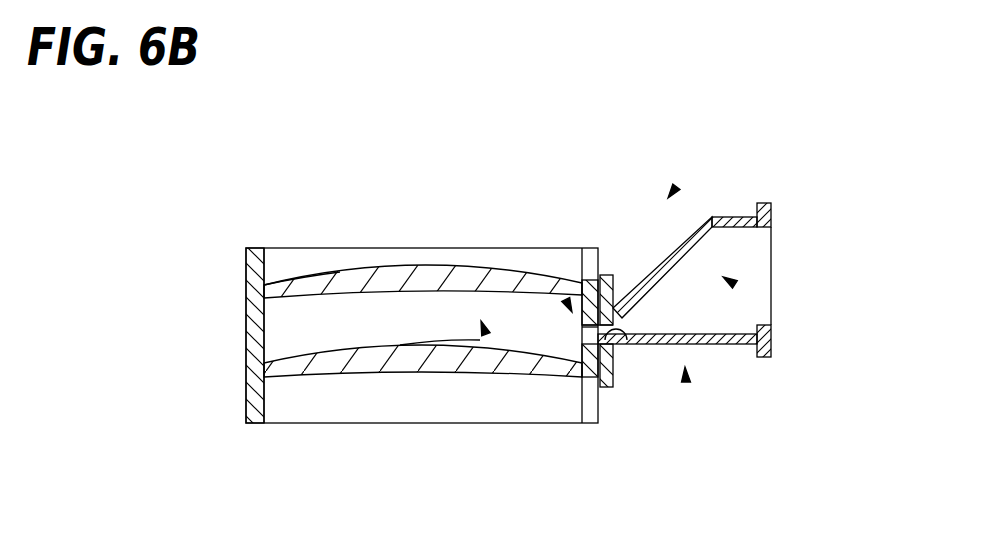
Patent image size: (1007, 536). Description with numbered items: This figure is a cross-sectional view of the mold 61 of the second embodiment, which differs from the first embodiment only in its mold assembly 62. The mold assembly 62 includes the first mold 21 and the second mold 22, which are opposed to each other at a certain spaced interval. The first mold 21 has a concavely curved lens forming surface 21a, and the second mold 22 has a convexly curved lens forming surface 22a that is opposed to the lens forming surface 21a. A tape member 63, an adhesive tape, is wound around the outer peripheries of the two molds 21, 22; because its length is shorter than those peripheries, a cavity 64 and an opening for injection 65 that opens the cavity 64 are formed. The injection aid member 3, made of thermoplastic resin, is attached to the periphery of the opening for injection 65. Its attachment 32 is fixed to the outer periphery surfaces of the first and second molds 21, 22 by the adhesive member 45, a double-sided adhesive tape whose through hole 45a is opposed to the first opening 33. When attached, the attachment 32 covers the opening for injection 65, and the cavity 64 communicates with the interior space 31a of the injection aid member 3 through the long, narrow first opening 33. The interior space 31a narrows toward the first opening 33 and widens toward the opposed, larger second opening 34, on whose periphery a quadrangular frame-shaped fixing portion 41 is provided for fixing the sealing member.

The injection aid member 3 is at (687, 385).
The first mold 21 is at (431, 275).
The lens forming surface 21a is at (346, 296).
The second mold 22 is at (353, 365).
The lens forming surface 22a is at (447, 340).
The interior space 31a is at (738, 286).
The attachment 32 is at (616, 300).
The first opening 33 is at (622, 345).
The second opening 34 is at (771, 327).
The fixing portion 41 is at (771, 210).
The adhesive member 45 is at (599, 391).
The through hole 45a is at (583, 327).
The mold 61 is at (678, 185).
The mold assembly 62 is at (283, 222).
The tape member 63 is at (253, 340).
The cavity 64 is at (486, 335).
The opening for injection 65 is at (565, 298).